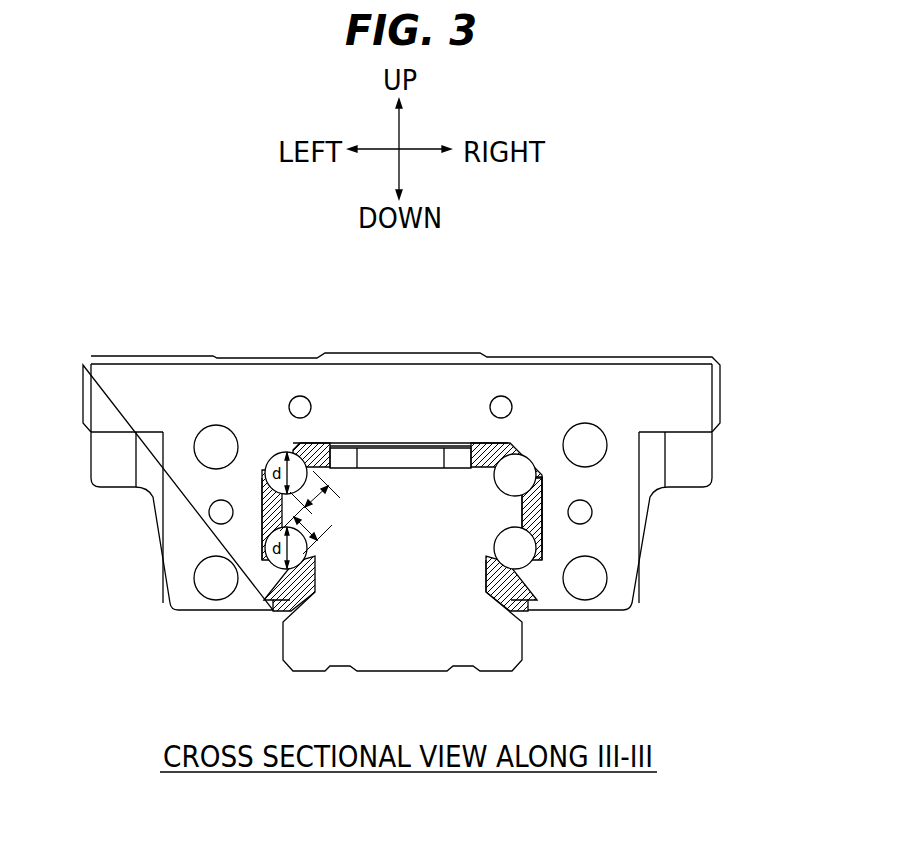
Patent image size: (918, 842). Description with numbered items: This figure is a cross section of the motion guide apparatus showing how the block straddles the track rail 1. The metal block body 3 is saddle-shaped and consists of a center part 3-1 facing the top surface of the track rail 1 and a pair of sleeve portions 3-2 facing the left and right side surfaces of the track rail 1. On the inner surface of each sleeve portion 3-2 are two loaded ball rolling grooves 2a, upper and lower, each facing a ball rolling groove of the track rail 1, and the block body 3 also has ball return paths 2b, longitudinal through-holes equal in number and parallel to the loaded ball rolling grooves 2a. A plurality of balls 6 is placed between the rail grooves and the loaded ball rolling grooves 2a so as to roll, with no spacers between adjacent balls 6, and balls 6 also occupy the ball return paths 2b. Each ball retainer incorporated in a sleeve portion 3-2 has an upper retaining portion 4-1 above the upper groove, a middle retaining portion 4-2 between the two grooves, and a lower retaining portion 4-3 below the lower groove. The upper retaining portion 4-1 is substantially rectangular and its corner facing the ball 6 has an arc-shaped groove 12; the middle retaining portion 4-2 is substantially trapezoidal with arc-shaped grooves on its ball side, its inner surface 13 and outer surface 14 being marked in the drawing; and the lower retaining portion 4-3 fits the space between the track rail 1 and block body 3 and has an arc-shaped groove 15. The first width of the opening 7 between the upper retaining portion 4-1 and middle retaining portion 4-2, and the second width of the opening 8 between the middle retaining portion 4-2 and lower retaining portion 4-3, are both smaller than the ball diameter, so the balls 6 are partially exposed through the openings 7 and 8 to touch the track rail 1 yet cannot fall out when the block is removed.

The track rail 1 is at (348, 630).
The loaded ball rolling groove 2a is at (522, 456).
The ball return path 2b is at (596, 426).
The block body 3 is at (422, 347).
The center part 3-1 is at (438, 377).
The sleeve portion 3-2 is at (177, 515).
The upper retaining portion 4-1 is at (493, 443).
The middle retaining portion 4-2 is at (542, 527).
The lower retaining portion 4-3 is at (499, 612).
The ball 6 is at (542, 478).
The opening 7 is at (330, 505).
The opening 8 is at (320, 530).
The groove 12 is at (478, 446).
The retainer inner surface 13 is at (521, 510).
The retainer outer surface 14 is at (542, 498).
The arc-shaped groove 15 is at (491, 576).